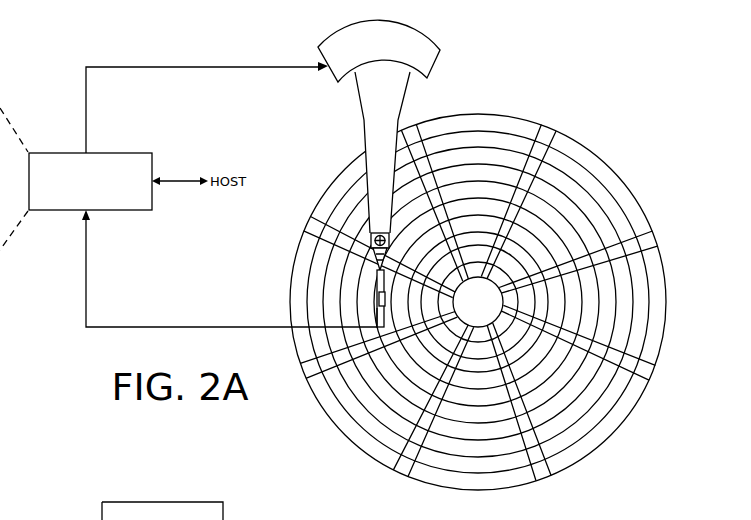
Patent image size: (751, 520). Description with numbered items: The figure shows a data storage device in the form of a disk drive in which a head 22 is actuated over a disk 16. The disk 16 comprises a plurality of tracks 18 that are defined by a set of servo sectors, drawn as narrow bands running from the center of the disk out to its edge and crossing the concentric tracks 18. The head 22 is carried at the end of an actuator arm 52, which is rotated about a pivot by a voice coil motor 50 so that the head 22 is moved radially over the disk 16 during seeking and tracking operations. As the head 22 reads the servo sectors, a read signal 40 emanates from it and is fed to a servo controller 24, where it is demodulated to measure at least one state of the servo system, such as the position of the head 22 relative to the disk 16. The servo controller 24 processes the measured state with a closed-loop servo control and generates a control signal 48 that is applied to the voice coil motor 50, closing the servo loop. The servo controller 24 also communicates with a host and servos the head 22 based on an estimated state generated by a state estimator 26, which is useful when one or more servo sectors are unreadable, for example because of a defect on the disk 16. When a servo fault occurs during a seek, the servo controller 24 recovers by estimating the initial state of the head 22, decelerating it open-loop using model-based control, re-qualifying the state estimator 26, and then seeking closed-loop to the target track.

The disk 16 is at (478, 283).
The tracks 18 is at (469, 140).
The head 22 is at (368, 296).
The servo controller 24 is at (122, 153).
The state estimator 26 is at (178, 502).
The read signal 40 is at (218, 327).
The control signal 48 is at (86, 97).
The voice coil motor 50 is at (339, 82).
The actuator arm 52 is at (364, 122).